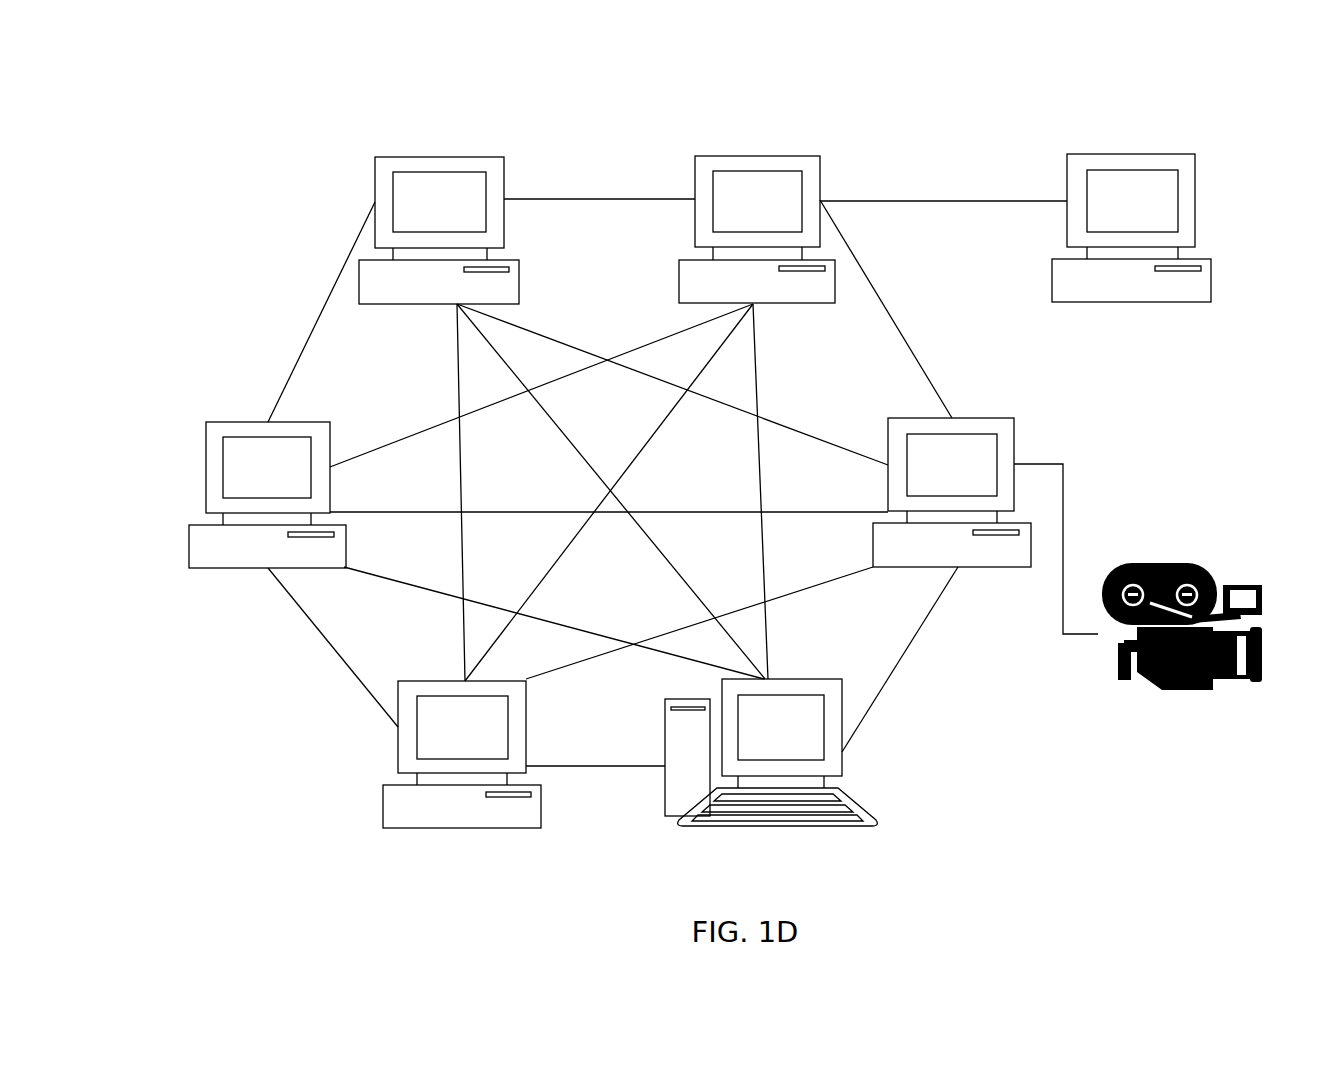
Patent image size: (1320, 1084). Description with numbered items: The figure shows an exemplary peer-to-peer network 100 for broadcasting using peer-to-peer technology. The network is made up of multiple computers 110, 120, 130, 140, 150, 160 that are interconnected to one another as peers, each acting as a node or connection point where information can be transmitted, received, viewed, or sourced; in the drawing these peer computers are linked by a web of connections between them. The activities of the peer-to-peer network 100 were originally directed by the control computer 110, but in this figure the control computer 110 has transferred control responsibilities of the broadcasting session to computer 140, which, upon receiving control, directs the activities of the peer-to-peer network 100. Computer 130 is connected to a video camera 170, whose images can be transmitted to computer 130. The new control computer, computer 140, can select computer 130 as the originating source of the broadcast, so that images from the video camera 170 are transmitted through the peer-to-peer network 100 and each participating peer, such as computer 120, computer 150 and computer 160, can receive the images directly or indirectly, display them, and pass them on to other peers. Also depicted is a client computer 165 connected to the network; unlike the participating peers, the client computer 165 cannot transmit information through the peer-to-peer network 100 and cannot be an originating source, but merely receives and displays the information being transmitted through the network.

The peer-to-peer network 100 is at (196, 197).
The control computer 110 is at (453, 157).
The computer 120 is at (757, 155).
The computer 130 is at (1014, 418).
The computer 140 is at (860, 807).
The computer 150 is at (382, 807).
The computer 160 is at (206, 422).
The client computer 165 is at (1197, 200).
The video camera 170 is at (1183, 550).